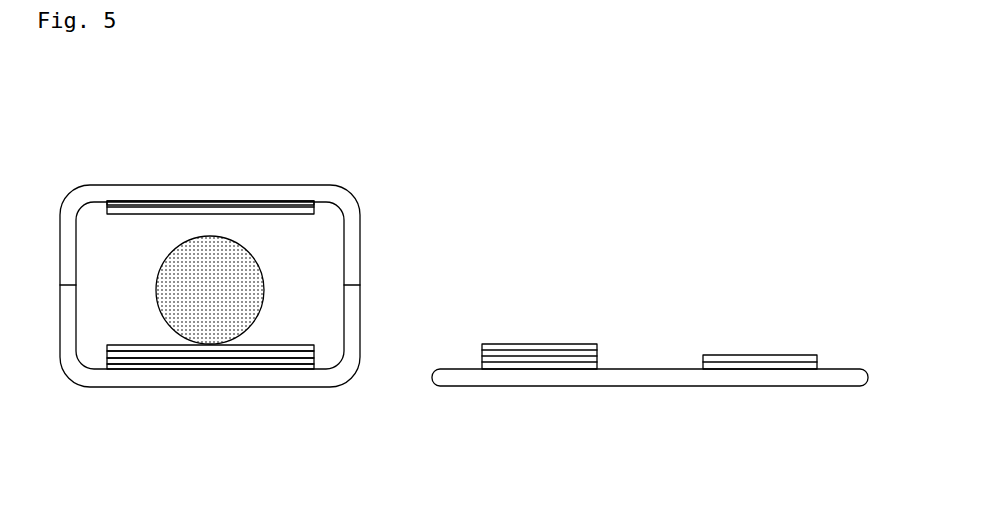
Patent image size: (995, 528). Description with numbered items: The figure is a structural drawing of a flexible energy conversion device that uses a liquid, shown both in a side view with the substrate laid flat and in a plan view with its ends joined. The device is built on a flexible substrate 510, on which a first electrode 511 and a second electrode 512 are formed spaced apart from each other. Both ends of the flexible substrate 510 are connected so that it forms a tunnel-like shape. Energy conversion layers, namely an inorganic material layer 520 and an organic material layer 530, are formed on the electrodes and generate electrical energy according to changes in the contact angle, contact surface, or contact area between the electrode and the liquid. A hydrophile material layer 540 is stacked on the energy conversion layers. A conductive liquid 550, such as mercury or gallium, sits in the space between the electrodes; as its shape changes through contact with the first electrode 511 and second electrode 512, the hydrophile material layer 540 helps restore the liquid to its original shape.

The flexible substrate 510 is at (320, 385).
The first electrode 511 is at (263, 367).
The second electrode 512 is at (143, 201).
The inorganic material layer 520 is at (213, 362).
The organic material layer 530 is at (165, 355).
The hydrophile material layer 540 is at (184, 212).
The conductive liquid 550 is at (244, 238).